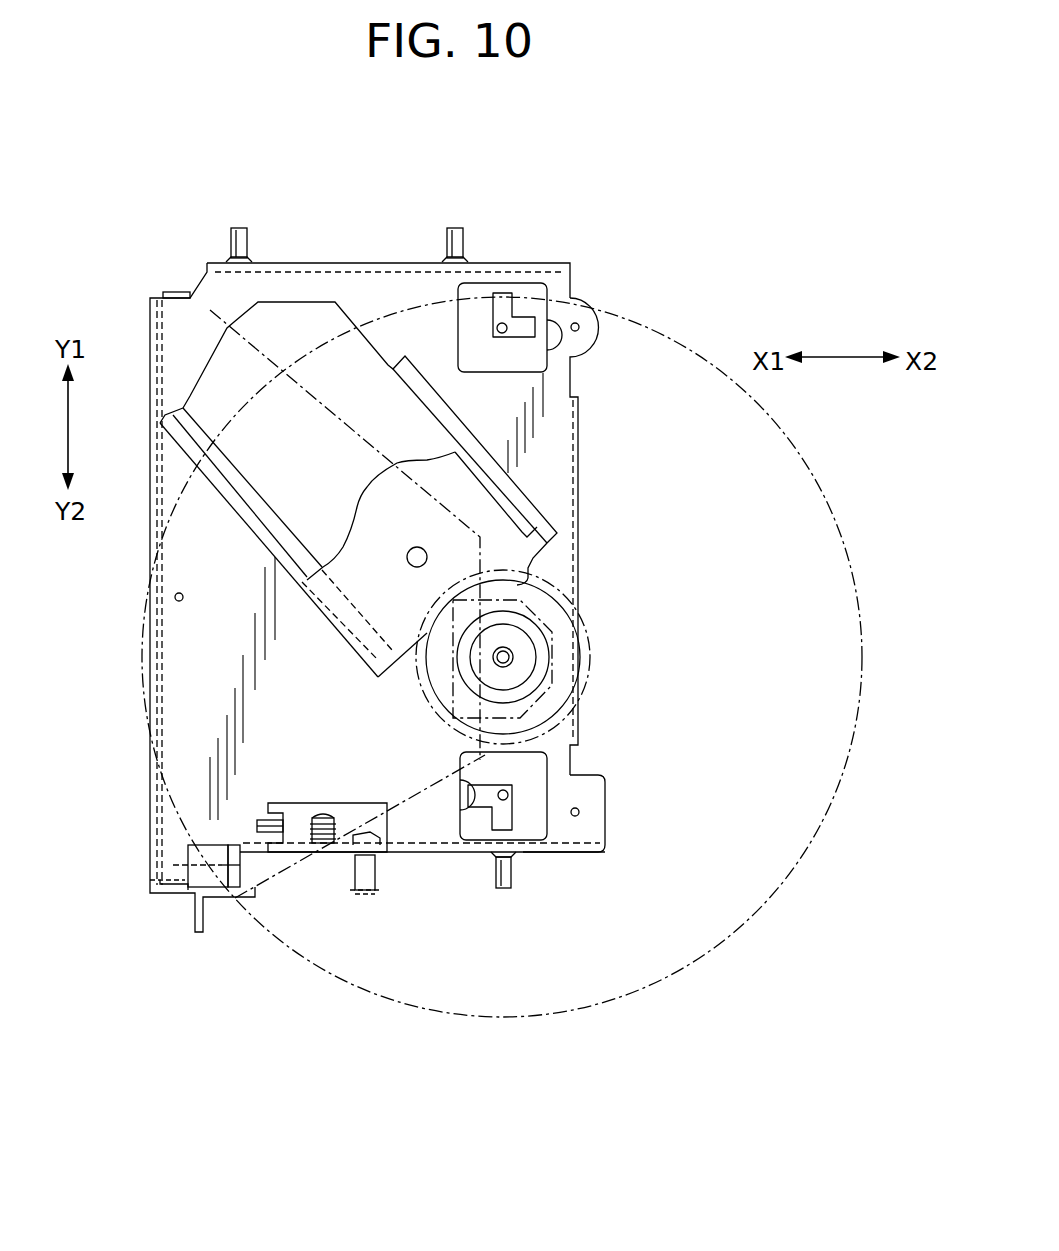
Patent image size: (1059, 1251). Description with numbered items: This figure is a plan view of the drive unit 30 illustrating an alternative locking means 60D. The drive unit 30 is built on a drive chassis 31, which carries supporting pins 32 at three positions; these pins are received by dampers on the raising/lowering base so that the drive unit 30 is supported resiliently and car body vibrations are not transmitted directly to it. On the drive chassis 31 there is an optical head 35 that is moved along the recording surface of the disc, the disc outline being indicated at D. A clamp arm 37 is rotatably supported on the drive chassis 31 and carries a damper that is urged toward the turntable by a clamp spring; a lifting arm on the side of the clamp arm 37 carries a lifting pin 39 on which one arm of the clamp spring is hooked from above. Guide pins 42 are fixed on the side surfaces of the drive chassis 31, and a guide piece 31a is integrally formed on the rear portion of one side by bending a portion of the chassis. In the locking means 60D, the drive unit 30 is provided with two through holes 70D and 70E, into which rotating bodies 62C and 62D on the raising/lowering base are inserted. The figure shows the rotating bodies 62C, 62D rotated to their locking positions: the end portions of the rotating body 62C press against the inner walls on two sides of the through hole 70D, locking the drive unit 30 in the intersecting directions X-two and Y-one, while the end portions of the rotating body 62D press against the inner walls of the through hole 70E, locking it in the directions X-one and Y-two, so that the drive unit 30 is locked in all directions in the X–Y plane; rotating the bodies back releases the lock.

The drive unit 30 is at (437, 579).
The drive chassis 31 is at (580, 442).
The guide piece 31a is at (237, 865).
The supporting pins 32 is at (580, 327).
The optical head 35 is at (375, 515).
The clamp arm 37 is at (308, 852).
The lifting pin 39 is at (377, 868).
The guide pin 42 is at (240, 235).
The locking means 60D is at (578, 838).
The rotating body 62C is at (508, 818).
The rotating body 62D is at (522, 333).
The through hole 70D is at (562, 788).
The through hole 70E is at (560, 350).
The disk outline D is at (584, 1016).